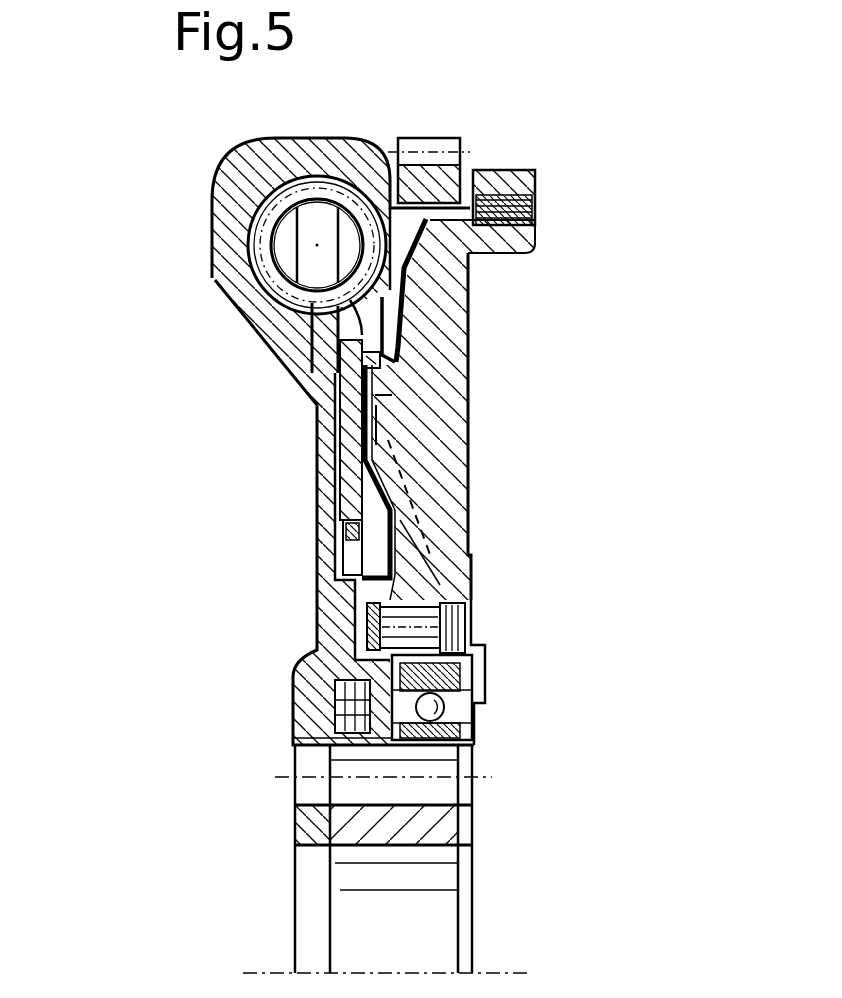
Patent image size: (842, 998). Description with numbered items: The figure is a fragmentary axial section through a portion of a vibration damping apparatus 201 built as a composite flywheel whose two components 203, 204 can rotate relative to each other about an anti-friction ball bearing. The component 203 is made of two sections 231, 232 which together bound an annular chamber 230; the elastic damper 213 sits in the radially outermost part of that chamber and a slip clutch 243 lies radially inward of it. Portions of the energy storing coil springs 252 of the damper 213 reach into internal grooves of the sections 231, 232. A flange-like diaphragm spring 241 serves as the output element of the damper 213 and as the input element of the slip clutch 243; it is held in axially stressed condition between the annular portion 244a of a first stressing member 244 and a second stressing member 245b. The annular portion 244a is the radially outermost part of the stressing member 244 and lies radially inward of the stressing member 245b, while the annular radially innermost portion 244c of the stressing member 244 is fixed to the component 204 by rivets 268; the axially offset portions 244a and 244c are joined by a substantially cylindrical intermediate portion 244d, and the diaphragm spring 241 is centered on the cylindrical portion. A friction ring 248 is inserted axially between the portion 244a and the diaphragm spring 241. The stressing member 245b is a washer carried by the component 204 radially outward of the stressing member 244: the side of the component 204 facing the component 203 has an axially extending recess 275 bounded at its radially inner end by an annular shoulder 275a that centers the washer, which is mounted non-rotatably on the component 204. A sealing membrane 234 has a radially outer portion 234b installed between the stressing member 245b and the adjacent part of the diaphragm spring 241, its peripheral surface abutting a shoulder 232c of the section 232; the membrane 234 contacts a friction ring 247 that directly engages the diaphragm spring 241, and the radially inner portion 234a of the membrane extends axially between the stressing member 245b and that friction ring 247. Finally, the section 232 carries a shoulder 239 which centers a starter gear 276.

The vibration damping apparatus 201 is at (447, 113).
The component 203 is at (292, 352).
The component 204 is at (435, 316).
The elastic damper 213 is at (247, 245).
The annular chamber 230 is at (318, 327).
The section 231 is at (243, 175).
The section 232 is at (370, 138).
The shoulder 232c is at (388, 300).
The membrane 234 is at (378, 381).
The radially inner portion of membrane 234a is at (371, 360).
The radially outer portion of membrane 234b is at (405, 342).
The shoulder 239 is at (478, 182).
The diaphragm spring 241 is at (440, 589).
The slip clutch 243 is at (337, 490).
The first stressing member 244 is at (365, 578).
The annular portion 244a is at (338, 545).
The radially innermost portion 244c is at (487, 705).
The intermediate portion 244d is at (358, 598).
The second stressing member 245b is at (388, 411).
The friction ring 247 is at (395, 385).
The friction ring 248 is at (468, 643).
The energy storing coil springs 252 is at (537, 200).
The rivets 268 is at (486, 701).
The recess 275 is at (380, 398).
The annular shoulder 275a is at (412, 440).
The starter gear 276 is at (460, 163).